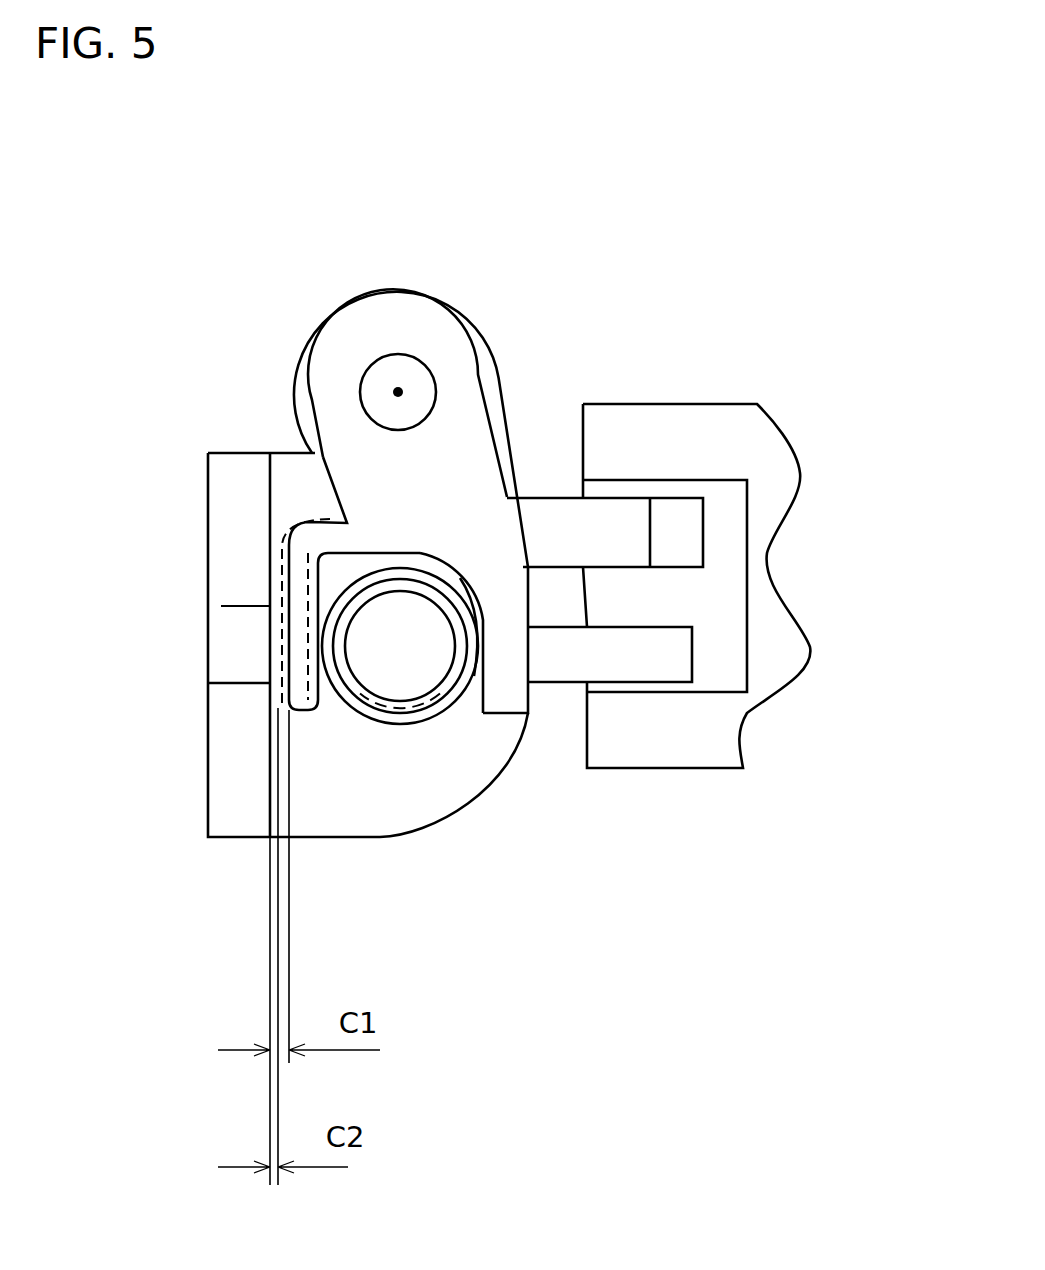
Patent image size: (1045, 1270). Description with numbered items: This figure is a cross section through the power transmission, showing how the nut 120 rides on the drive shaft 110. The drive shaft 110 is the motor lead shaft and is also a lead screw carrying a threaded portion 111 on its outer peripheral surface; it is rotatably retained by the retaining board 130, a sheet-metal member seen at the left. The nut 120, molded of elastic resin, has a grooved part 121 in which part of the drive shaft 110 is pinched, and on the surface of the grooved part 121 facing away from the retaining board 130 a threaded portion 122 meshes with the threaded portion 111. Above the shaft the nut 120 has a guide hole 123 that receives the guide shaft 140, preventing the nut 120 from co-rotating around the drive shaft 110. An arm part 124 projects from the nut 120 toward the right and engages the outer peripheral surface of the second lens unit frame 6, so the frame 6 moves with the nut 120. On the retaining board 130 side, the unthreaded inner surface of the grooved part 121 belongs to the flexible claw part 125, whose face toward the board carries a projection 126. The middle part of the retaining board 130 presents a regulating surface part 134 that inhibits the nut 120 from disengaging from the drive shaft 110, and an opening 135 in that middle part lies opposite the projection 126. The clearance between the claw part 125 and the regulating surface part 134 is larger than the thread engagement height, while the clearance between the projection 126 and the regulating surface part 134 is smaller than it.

The nut 120 is at (362, 319).
The guide hole 123 is at (368, 370).
The guide shaft 140 is at (398, 392).
The regulating surface part 134 is at (283, 498).
The second lens unit frame 6 is at (755, 442).
The arm part 124 is at (680, 525).
The retaining board 130 is at (217, 512).
The opening 135 is at (221, 606).
The projection 126 is at (277, 647).
The claw part 125 is at (312, 713).
The drive shaft 110 is at (402, 651).
The threaded portion 111 is at (425, 715).
The grooved part 121 is at (480, 709).
The threaded portion 122 is at (472, 677).